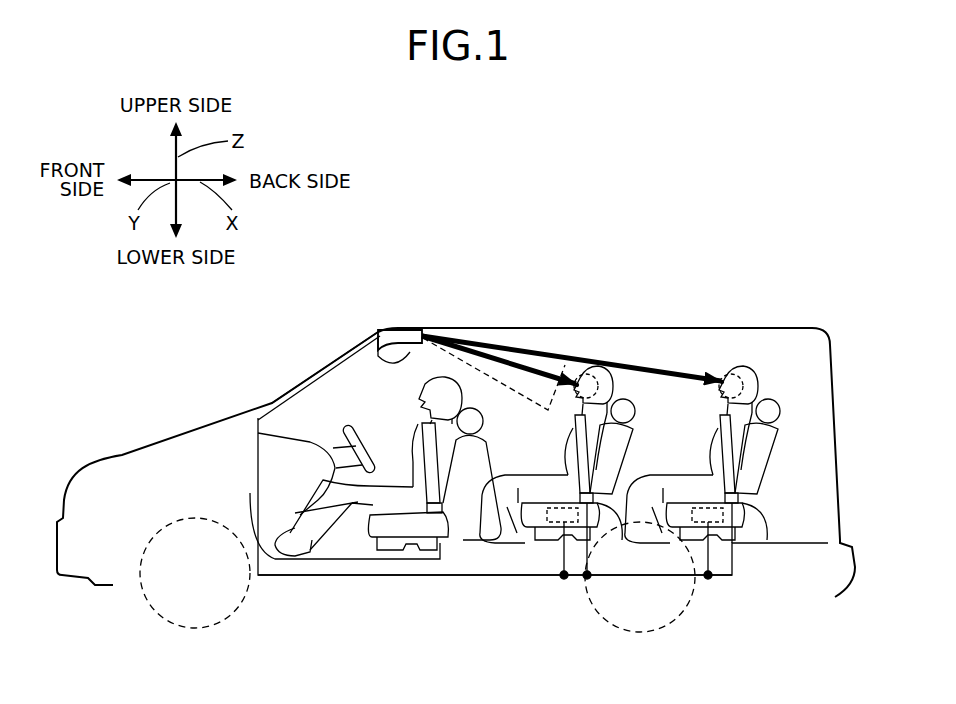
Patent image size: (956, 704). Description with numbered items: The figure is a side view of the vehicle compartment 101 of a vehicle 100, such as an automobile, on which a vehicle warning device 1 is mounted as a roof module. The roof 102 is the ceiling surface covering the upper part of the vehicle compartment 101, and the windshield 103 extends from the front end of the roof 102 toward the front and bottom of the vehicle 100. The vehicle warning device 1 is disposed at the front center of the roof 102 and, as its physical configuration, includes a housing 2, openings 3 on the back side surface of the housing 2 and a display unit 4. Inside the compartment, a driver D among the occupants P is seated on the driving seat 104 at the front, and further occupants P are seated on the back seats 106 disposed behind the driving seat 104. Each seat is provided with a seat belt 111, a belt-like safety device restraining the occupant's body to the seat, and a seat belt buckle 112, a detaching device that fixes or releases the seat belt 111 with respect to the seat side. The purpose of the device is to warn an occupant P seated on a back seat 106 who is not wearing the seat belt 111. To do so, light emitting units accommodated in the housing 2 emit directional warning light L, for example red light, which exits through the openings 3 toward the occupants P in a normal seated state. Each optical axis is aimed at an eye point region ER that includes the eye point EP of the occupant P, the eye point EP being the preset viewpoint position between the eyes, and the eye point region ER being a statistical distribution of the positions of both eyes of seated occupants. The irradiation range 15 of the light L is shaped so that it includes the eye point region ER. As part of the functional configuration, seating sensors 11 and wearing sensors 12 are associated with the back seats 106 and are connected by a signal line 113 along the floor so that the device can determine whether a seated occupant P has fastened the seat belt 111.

The vehicle warning device 1 is at (415, 324).
The housing 2 is at (340, 356).
The opening 3 is at (431, 330).
The display unit 4 is at (382, 340).
The seating sensor 11 is at (547, 548).
The wearing sensor 12 is at (590, 582).
The irradiation range 15 is at (512, 345).
The vehicle 100 is at (428, 262).
The vehicle compartment 101 is at (677, 348).
The roof 102 is at (553, 337).
The windshield 103 is at (310, 375).
The driving seat 104 is at (368, 532).
The back seat 106 is at (515, 525).
The seat belt 111 is at (420, 435).
The seat belt buckle 112 is at (444, 505).
The signal line 113 is at (302, 578).
The driver D is at (411, 462).
The occupant P is at (562, 461).
The eye point EP is at (578, 380).
The eye point region ER is at (598, 372).
The light L is at (493, 355).